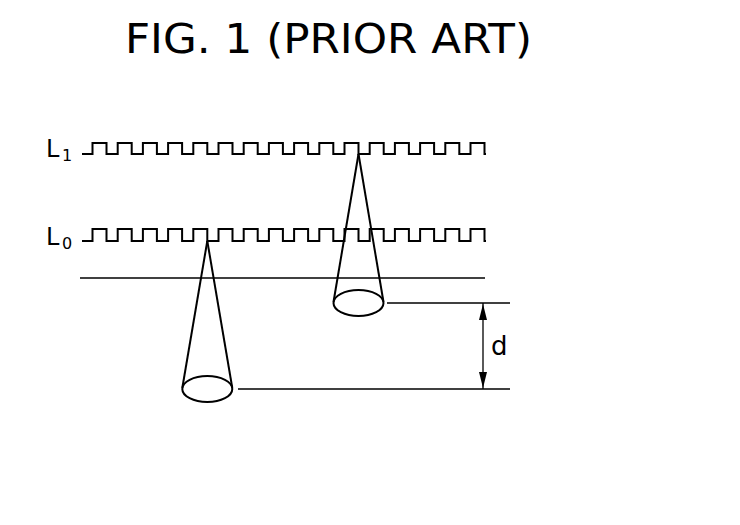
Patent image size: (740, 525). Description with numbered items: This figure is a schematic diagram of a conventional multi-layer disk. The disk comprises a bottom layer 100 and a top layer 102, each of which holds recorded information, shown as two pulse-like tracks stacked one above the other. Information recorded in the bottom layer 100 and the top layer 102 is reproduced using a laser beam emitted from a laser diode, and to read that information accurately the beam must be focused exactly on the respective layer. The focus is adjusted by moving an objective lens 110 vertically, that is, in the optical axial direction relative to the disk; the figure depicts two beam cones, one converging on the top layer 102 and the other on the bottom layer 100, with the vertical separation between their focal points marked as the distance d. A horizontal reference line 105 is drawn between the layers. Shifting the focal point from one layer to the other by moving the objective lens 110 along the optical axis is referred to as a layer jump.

The top layer 102 is at (490, 151).
The bottom layer 100 is at (490, 238).
The intermediate layer / reference plane 105 is at (490, 279).
The objective lens 110 is at (207, 402).